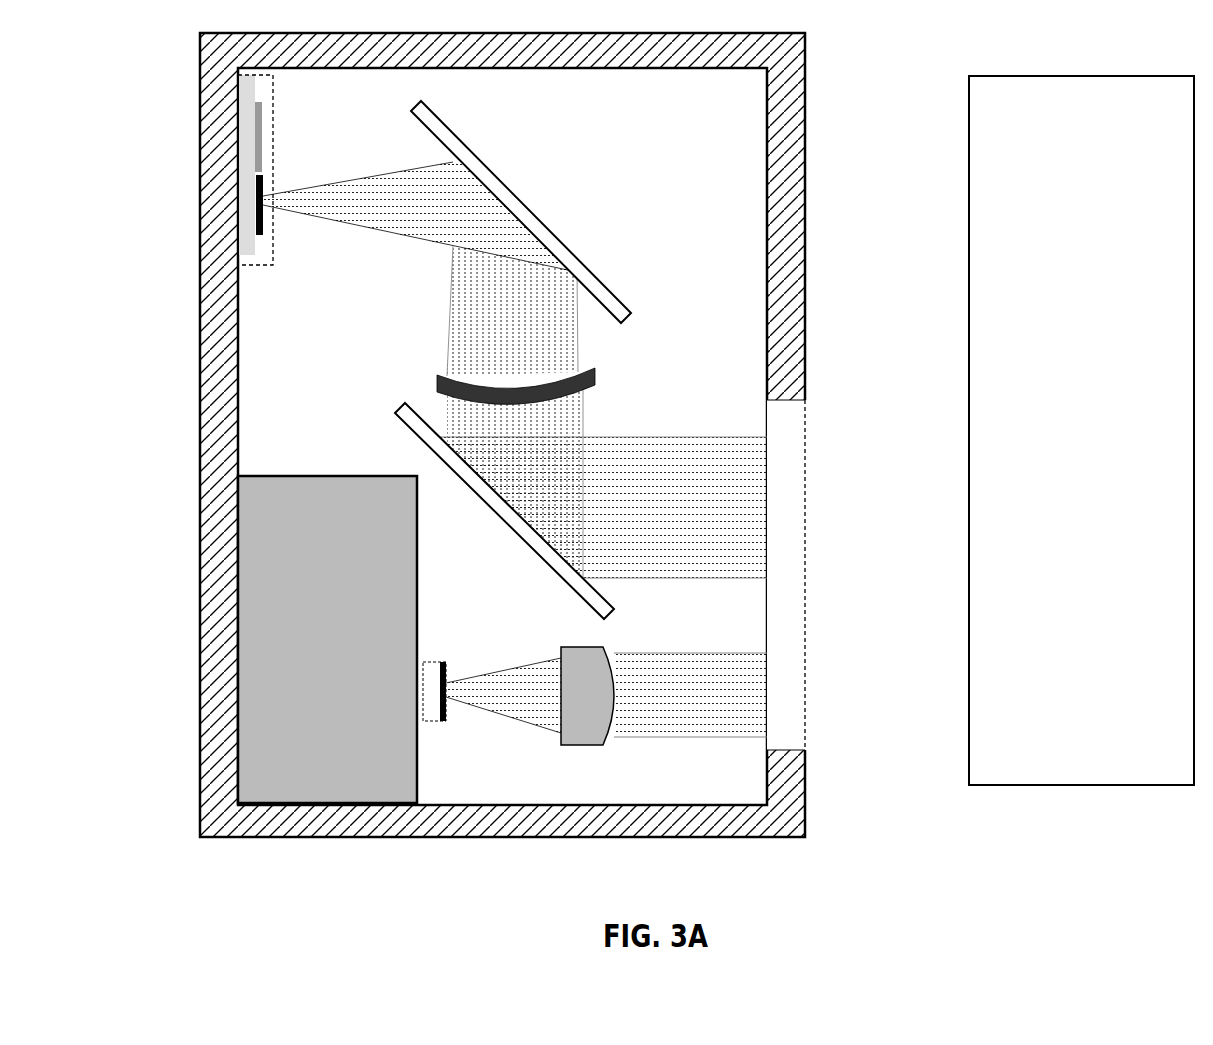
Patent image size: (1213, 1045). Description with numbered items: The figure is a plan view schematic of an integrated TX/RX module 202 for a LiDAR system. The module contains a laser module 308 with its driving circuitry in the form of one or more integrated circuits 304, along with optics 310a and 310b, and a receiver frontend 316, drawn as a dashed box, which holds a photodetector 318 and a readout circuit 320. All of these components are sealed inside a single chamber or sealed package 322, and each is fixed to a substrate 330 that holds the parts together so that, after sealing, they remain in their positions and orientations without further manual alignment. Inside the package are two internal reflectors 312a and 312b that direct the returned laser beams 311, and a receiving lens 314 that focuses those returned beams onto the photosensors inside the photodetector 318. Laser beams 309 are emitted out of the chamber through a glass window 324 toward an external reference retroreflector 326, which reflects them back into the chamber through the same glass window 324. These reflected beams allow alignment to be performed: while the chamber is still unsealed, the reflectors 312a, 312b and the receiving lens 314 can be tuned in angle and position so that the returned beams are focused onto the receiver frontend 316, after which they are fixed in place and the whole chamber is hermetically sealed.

The integrated TX/RX module 202 is at (200, 432).
The integrated circuits 304 is at (385, 527).
The laser module 308 is at (420, 691).
The laser beams 309 is at (683, 737).
The optics 310a is at (439, 722).
The optics 310b is at (580, 745).
The returned laser beams 311 is at (718, 437).
The internal reflector 312a is at (428, 440).
The internal reflector 312b is at (575, 265).
The receiving lens 314 is at (462, 391).
The receiver frontend 316 is at (270, 162).
The photodetector 318 is at (258, 236).
The readout circuit 320 is at (273, 97).
The sealed package 322 is at (803, 87).
The glass window 324 is at (805, 715).
The reference retroreflector 326 is at (1081, 430).
The substrate 330 is at (745, 168).